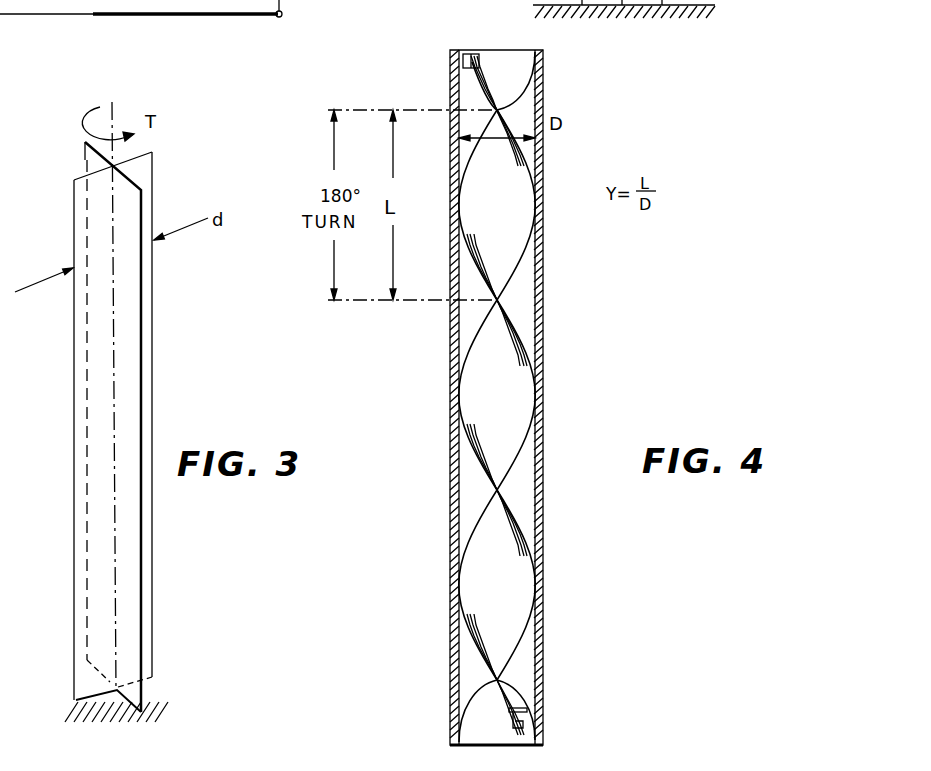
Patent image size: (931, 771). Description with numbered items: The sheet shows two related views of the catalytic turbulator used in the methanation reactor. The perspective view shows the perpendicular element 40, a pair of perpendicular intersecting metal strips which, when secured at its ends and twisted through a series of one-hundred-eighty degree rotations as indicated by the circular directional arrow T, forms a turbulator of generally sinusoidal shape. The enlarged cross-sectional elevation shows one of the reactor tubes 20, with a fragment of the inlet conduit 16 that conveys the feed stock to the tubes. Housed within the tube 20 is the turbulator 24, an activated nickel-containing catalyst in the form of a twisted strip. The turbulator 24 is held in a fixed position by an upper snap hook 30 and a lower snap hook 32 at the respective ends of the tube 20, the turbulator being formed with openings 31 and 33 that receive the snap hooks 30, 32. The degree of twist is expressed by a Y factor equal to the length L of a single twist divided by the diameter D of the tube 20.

In FIG. 3, the inlet conduit 16 is at (173, 17).
In FIG. 4, the tube 20 is at (543, 467).
In FIG. 4, the turbulator 24 is at (526, 373).
In FIG. 4, the upper snap hook 30 is at (483, 58).
In FIG. 4, the opening 31 is at (465, 54).
In FIG. 4, the lower snap hook 32 is at (528, 712).
In FIG. 4, the opening 33 is at (524, 711).
In FIG. 3, the perpendicular element 40 is at (148, 407).